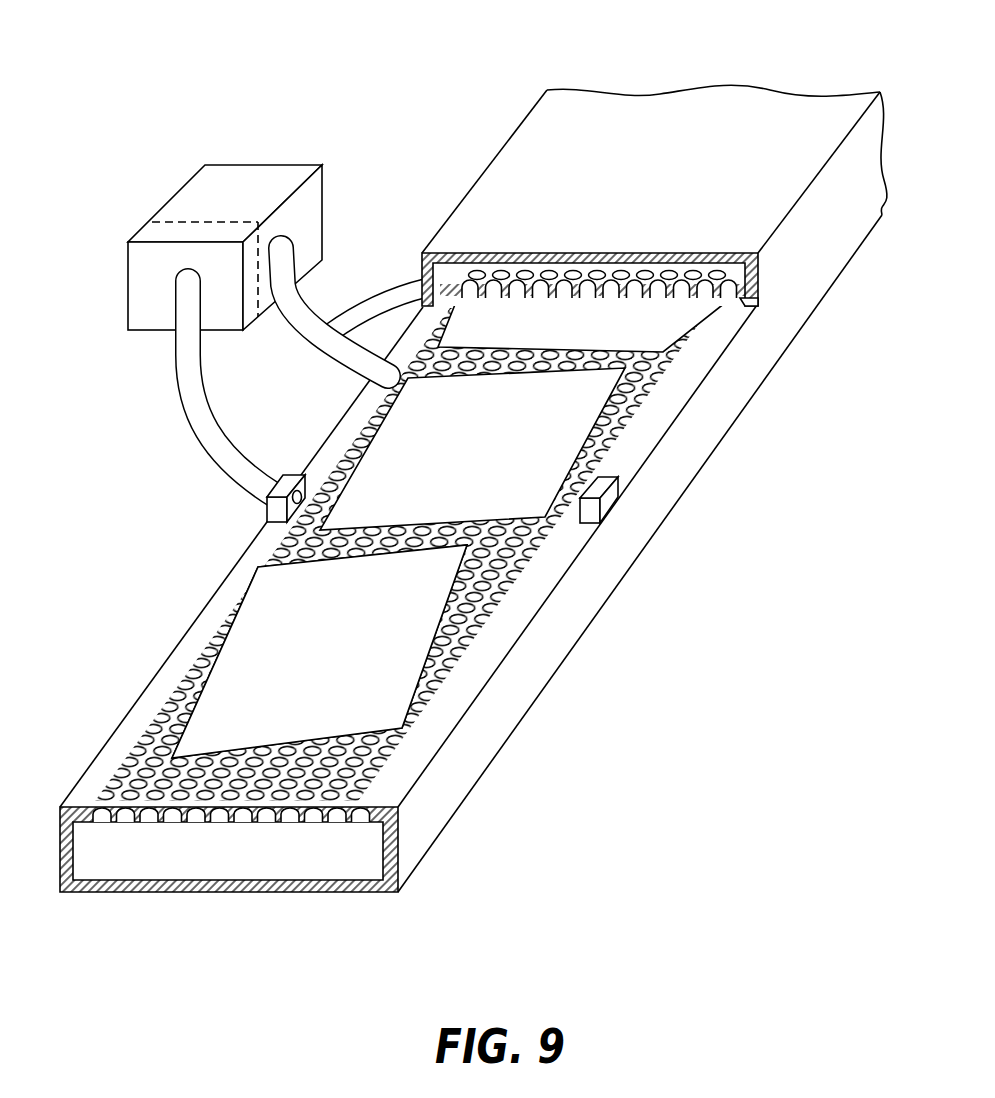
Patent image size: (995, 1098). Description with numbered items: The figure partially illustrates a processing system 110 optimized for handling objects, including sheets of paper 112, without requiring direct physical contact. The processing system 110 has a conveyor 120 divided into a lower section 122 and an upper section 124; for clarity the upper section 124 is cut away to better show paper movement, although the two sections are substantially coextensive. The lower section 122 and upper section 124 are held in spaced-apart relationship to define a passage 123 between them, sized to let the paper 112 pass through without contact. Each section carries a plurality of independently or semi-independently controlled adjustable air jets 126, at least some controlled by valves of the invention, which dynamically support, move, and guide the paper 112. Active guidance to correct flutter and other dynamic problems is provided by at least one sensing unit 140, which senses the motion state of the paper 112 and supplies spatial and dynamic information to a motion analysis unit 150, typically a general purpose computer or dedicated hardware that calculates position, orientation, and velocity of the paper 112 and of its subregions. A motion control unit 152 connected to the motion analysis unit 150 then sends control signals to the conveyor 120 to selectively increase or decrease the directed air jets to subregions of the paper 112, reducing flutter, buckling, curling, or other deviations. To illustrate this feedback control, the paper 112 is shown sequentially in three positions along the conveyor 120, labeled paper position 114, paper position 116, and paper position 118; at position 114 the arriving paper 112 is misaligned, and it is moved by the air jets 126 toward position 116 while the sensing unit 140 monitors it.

The processing system 110 is at (198, 56).
The paper 112 is at (232, 676).
The paper position 114 is at (295, 605).
The paper position 116 is at (410, 432).
The paper position 118 is at (525, 317).
The conveyor 120 is at (674, 596).
The lower section 122 is at (535, 678).
The passage 123 is at (740, 313).
The upper section 124 is at (798, 217).
The adjustable air jets 126 is at (408, 762).
The sensing unit 140 is at (273, 477).
The motion analysis unit 150 is at (162, 232).
The motion control unit 152 is at (247, 190).